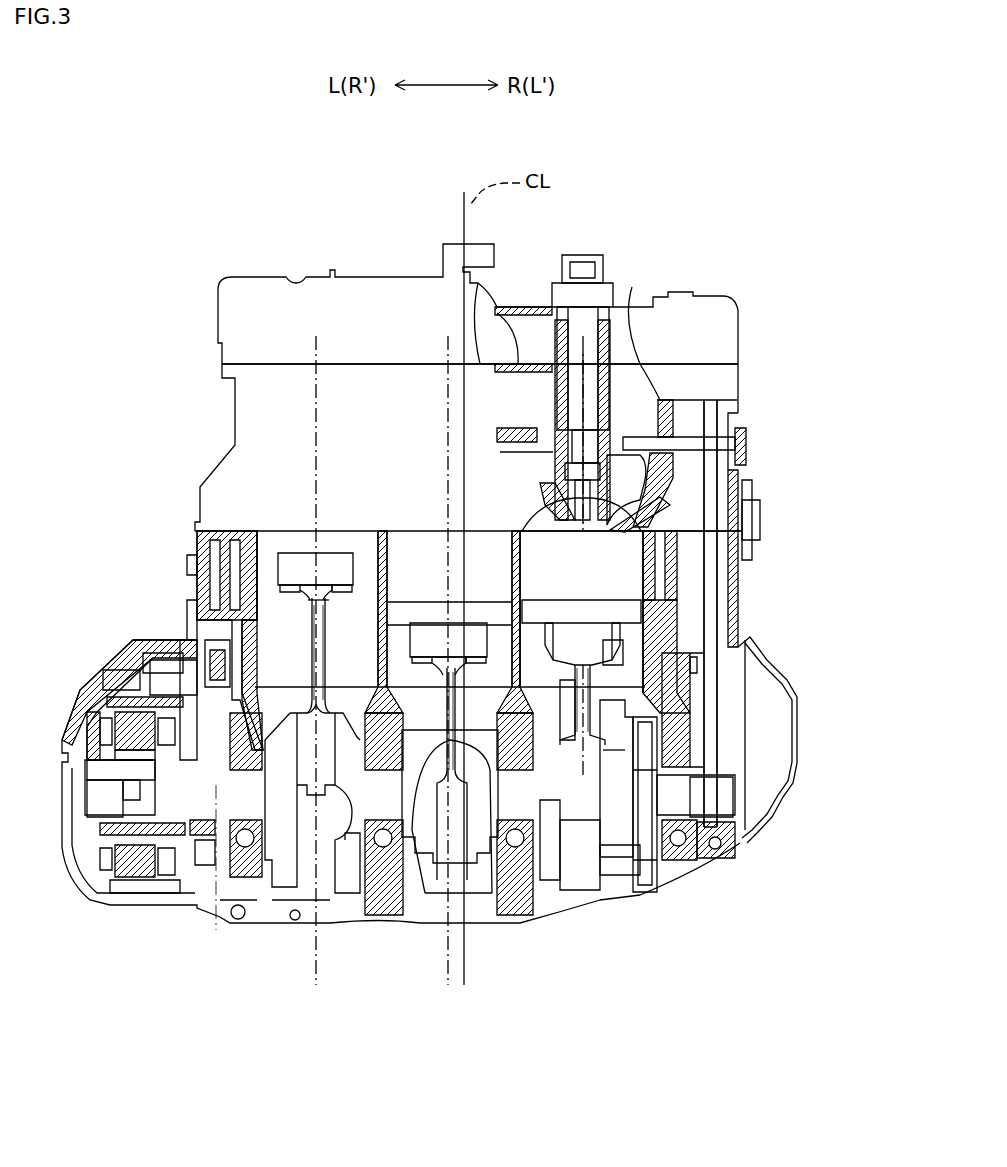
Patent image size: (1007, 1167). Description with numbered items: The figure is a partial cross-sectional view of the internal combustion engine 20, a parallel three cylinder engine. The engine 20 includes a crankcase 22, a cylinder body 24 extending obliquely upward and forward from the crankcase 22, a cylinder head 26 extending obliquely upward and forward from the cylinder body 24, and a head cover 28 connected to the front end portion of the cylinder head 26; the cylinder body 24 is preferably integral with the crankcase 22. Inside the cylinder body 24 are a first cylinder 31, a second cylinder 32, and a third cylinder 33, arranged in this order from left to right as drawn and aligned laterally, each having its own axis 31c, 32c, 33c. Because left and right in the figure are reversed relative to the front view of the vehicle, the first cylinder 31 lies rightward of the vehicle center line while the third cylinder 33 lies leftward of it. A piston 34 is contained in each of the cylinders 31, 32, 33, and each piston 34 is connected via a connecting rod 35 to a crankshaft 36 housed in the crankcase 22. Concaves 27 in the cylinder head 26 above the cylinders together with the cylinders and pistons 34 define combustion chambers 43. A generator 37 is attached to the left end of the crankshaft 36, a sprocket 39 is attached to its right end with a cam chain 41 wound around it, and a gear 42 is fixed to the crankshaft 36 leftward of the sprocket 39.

The internal combustion engine 20 is at (695, 218).
The crankcase 22 is at (798, 725).
The cylinder body 24 is at (740, 597).
The cylinder head 26 is at (745, 468).
The concave 27 is at (590, 552).
The head cover 28 is at (740, 345).
The first cylinder 31 is at (262, 550).
The axis of the first cylinder 31c is at (313, 353).
The second cylinder 32 is at (396, 562).
The axis of the second cylinder 32c is at (445, 353).
The third cylinder 33 is at (490, 592).
The axis of the third cylinder 33c is at (535, 350).
The piston 34 is at (290, 532).
The connecting rod 35 is at (305, 650).
The crankshaft 36 is at (485, 832).
The generator 37 is at (135, 870).
The sprocket 39 is at (743, 852).
The cam chain 41 is at (715, 720).
The gear 42 is at (642, 890).
The combustion chamber 43 is at (530, 560).